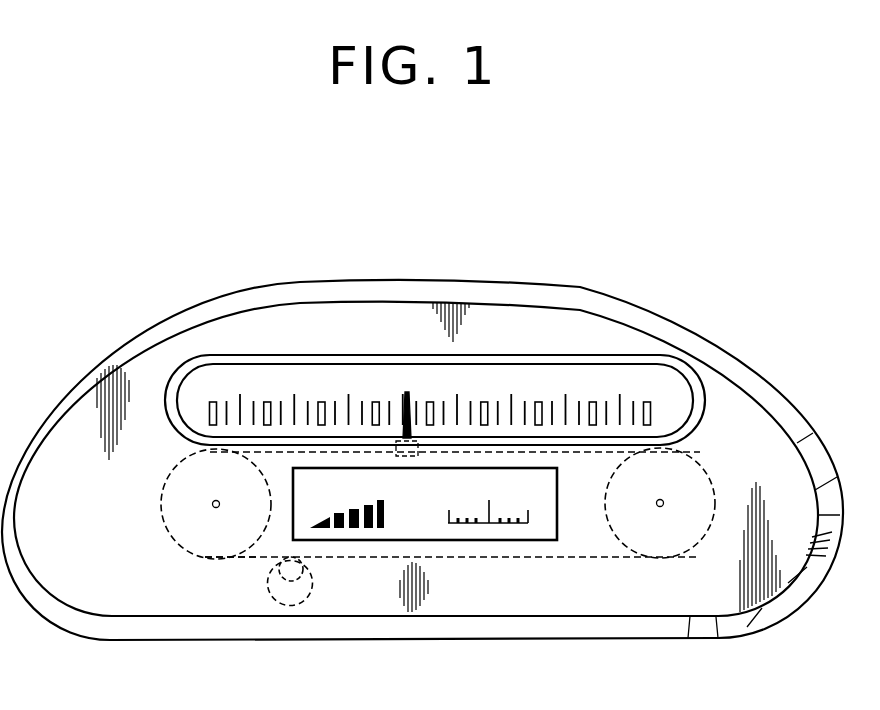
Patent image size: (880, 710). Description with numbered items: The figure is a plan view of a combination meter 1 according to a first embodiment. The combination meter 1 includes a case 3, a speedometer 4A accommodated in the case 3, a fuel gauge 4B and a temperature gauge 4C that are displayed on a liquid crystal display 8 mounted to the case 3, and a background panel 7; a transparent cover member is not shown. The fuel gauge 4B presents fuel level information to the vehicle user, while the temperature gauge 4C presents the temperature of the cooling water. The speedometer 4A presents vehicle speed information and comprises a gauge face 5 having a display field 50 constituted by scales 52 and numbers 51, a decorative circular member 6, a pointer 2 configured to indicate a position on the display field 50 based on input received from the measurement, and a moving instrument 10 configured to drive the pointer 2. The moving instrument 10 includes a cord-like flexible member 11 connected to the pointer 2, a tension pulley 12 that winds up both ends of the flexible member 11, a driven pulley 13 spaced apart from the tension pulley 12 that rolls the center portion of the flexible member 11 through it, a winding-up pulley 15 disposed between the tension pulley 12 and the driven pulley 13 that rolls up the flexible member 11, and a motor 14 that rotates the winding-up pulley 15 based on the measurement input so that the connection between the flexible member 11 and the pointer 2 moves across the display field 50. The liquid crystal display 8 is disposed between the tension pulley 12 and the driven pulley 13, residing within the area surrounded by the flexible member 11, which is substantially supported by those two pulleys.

The combination meter 1 is at (637, 228).
The pointer 2 is at (399, 390).
The case 3 is at (745, 372).
The speedometer 4A is at (275, 353).
The fuel gauge 4B is at (369, 535).
The temperature gauge 4C is at (498, 535).
The gauge face 5 is at (559, 378).
The decorative circular member 6 is at (665, 360).
The background panel 7 is at (683, 603).
The liquid crystal display 8 is at (542, 530).
The moving instrument 10 is at (181, 547).
The flexible member 11 is at (250, 557).
The tension pulley 12 is at (200, 557).
The driven pulley 13 is at (690, 548).
The motor 14 is at (311, 600).
The winding-up pulley 15 is at (272, 604).
The display field 50 is at (387, 316).
The numbers 51 is at (262, 378).
The scales 52 is at (207, 417).